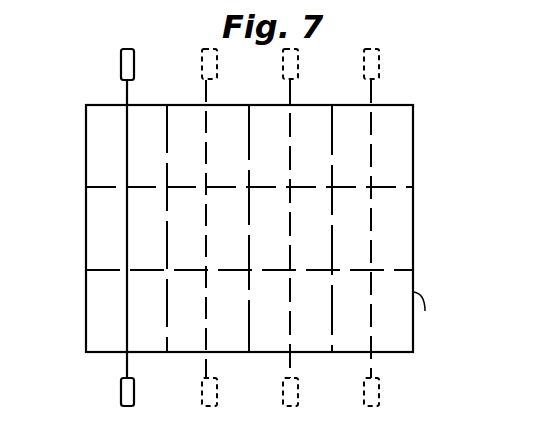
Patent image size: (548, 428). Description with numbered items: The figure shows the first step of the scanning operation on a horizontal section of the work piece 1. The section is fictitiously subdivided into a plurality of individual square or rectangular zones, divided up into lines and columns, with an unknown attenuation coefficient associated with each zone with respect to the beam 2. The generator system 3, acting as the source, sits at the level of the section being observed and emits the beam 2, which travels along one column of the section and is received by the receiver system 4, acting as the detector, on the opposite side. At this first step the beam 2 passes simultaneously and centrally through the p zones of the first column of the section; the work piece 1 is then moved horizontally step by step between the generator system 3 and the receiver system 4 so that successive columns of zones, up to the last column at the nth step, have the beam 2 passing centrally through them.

The work piece 1 is at (416, 206).
The beam 2 is at (126, 239).
The generator system 3 is at (120, 67).
The receiver system 4 is at (120, 393).